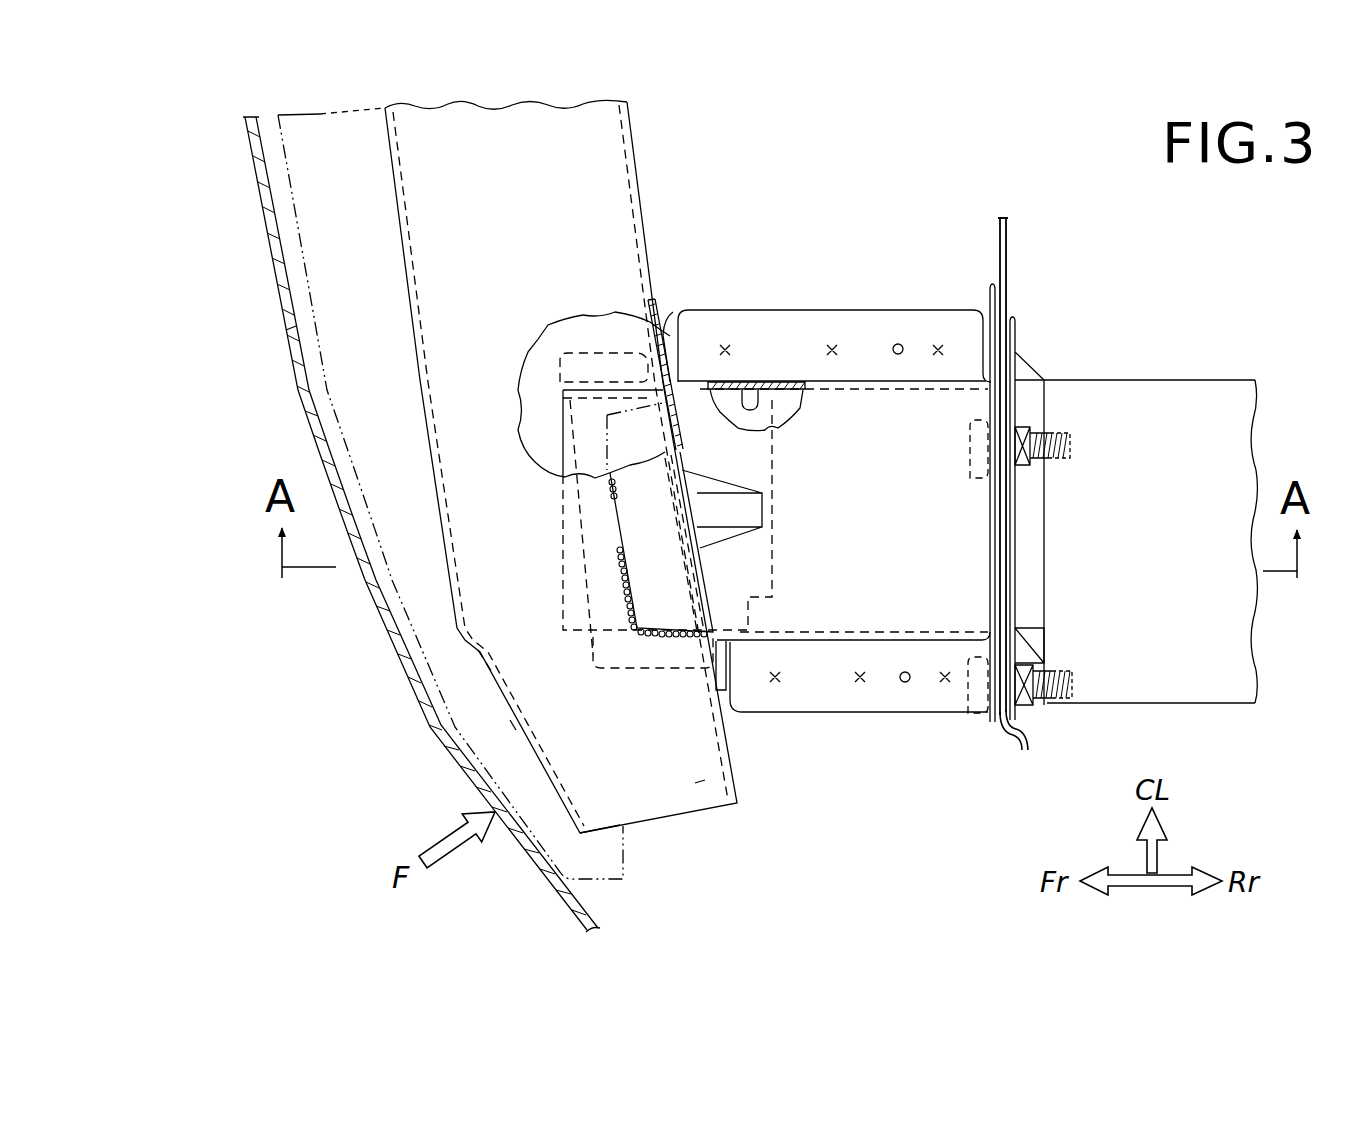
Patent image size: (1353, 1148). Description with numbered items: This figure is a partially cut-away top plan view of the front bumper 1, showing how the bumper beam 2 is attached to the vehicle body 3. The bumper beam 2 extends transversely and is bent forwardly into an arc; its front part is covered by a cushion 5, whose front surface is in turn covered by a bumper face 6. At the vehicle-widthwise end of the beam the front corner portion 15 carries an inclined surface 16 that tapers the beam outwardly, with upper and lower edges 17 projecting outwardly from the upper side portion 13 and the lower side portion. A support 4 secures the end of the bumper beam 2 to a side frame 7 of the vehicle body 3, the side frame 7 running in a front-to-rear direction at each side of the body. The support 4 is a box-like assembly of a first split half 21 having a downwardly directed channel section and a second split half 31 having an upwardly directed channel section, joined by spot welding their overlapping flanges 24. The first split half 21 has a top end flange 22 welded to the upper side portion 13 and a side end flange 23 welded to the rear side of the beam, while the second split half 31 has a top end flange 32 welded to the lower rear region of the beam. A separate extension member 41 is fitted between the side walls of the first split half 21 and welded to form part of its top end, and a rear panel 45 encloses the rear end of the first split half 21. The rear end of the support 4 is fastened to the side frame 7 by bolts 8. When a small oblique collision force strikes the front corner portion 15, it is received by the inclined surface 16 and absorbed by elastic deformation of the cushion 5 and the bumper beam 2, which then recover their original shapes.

The bumper 1 is at (238, 198).
The bumper beam 2 is at (399, 236).
The vehicle body 3 is at (997, 256).
The support 4 is at (865, 228).
The cushion 5 is at (310, 320).
The bumper face 6 is at (305, 402).
The side frame 7 is at (1135, 378).
The bolt 8 is at (968, 454).
The upper side portion 13 is at (700, 783).
The front corner portion 15 is at (486, 688).
The inclined surface 16 is at (515, 735).
The upper and lower edges 17 is at (568, 804).
The first split half 21 is at (830, 433).
The top end flange 22 is at (612, 524).
The side end flange 23 is at (664, 334).
The flange 24 is at (846, 700).
The second split half 31 is at (597, 352).
The top end flange 32 is at (655, 672).
The extension member 41 is at (762, 392).
The rear panel 45 is at (1003, 728).